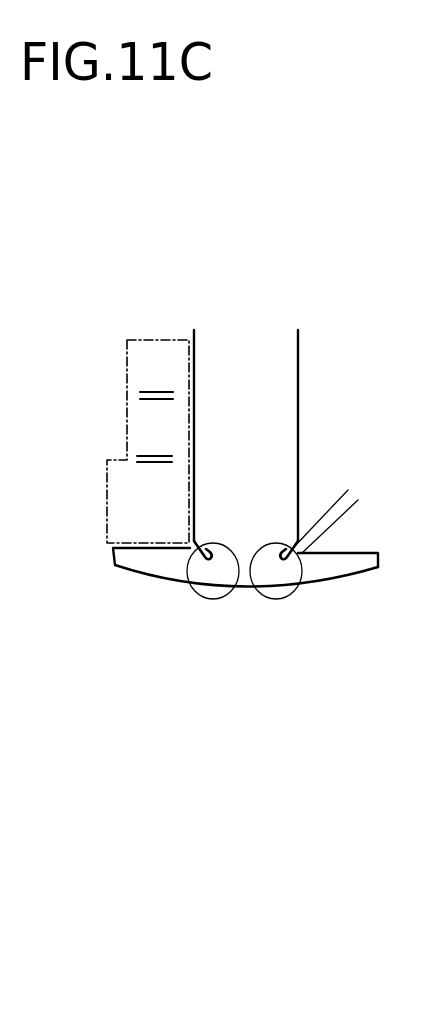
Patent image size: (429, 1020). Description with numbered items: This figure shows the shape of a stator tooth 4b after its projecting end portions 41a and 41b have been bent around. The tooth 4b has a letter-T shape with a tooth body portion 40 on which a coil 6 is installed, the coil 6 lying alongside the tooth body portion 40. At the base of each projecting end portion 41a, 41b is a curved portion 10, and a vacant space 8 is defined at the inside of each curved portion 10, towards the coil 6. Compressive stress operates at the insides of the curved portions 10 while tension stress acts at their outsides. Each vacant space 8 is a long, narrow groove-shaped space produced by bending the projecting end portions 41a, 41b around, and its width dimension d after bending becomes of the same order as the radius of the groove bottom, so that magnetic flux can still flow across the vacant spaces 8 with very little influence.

The tooth body portion 40 is at (275, 365).
The tooth 4b is at (299, 425).
The coil 6 is at (124, 427).
The vacant space 8 is at (193, 581).
The curved portion 10 is at (268, 598).
The projecting end portion 41a is at (148, 563).
The projecting end portion 41b is at (333, 570).
The width dimension d is at (330, 483).